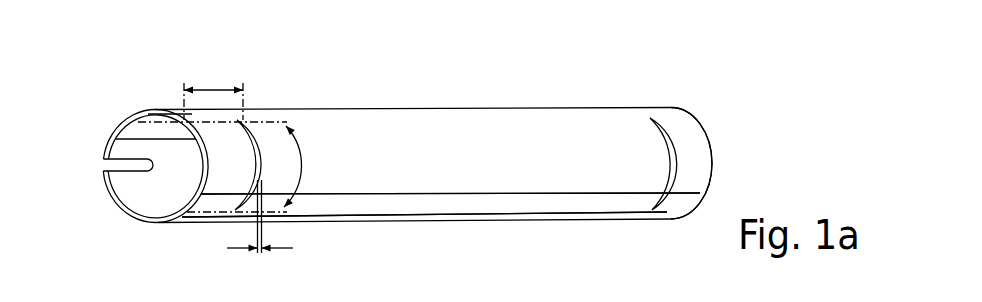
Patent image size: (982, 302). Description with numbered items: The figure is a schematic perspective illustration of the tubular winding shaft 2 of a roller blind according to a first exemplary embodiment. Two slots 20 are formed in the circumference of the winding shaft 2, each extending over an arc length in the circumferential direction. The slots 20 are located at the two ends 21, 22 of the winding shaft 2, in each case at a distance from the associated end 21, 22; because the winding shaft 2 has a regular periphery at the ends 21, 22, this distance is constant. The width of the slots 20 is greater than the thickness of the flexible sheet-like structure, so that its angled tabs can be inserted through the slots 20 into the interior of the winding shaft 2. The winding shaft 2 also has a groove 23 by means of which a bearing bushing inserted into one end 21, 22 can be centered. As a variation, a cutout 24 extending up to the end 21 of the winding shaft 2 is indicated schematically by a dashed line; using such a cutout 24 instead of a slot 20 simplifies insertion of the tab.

The winding shaft 2 is at (731, 74).
The slots 20 is at (248, 122).
The end of the winding shaft 21 is at (110, 114).
The end of the winding shaft 22 is at (716, 133).
The groove 23 is at (106, 167).
The cutout 24 is at (214, 211).